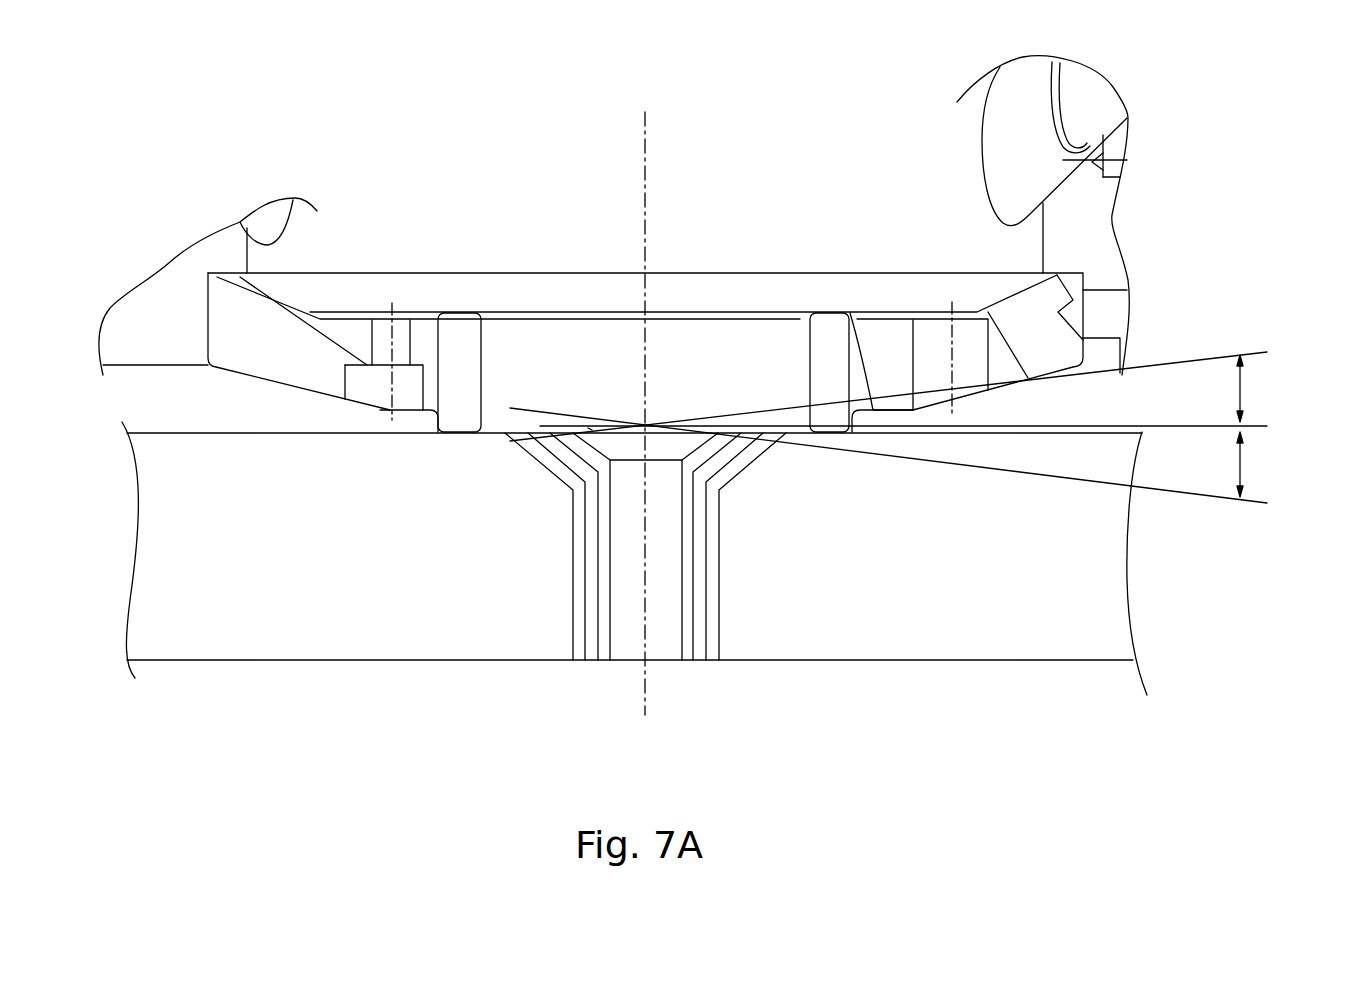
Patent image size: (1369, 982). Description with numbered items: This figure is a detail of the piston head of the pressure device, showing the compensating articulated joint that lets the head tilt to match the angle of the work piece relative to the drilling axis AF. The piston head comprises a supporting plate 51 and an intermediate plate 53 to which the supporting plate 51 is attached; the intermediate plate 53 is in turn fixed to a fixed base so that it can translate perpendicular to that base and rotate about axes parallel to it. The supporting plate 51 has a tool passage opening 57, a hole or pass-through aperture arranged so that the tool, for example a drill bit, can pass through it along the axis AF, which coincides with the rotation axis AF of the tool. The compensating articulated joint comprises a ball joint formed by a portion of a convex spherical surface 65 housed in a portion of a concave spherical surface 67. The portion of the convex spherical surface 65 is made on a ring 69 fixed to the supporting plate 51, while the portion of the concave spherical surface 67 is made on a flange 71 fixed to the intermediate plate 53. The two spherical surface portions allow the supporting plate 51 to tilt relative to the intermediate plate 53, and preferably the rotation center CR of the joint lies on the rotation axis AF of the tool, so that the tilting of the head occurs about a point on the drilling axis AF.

The supporting plate 51 is at (1097, 537).
The intermediate plate 53 is at (1090, 240).
The tool passage opening 57 is at (662, 630).
The portion of a convex spherical surface 65 is at (433, 355).
The portion of a concave spherical surface 67 is at (495, 330).
The ring 69 is at (797, 352).
The flange 71 is at (890, 337).
The rotation axis AF is at (645, 128).
The rotation center CR is at (590, 428).